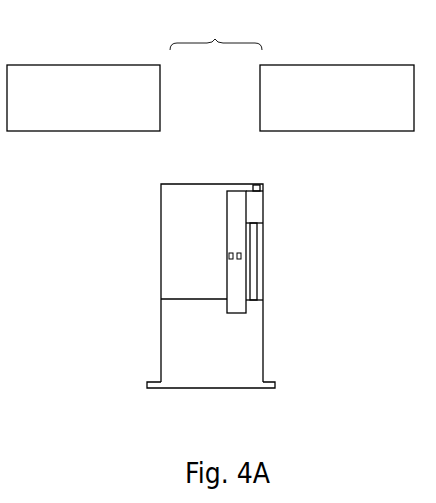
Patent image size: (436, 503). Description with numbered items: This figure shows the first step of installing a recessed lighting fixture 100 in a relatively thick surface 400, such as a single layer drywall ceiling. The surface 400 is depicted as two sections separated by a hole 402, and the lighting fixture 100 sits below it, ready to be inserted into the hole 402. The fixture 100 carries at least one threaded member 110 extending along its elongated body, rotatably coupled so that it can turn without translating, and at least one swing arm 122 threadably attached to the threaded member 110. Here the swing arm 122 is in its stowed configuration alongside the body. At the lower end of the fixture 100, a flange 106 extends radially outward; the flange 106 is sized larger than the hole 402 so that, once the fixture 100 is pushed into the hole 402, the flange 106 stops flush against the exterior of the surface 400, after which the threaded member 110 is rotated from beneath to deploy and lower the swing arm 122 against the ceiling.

The surface 400 is at (97, 65).
The hole 402 is at (216, 28).
The recessed lighting fixture 100 is at (233, 308).
The swing arm 122 is at (227, 250).
The threaded member 110 is at (257, 299).
The flange 106 is at (275, 388).